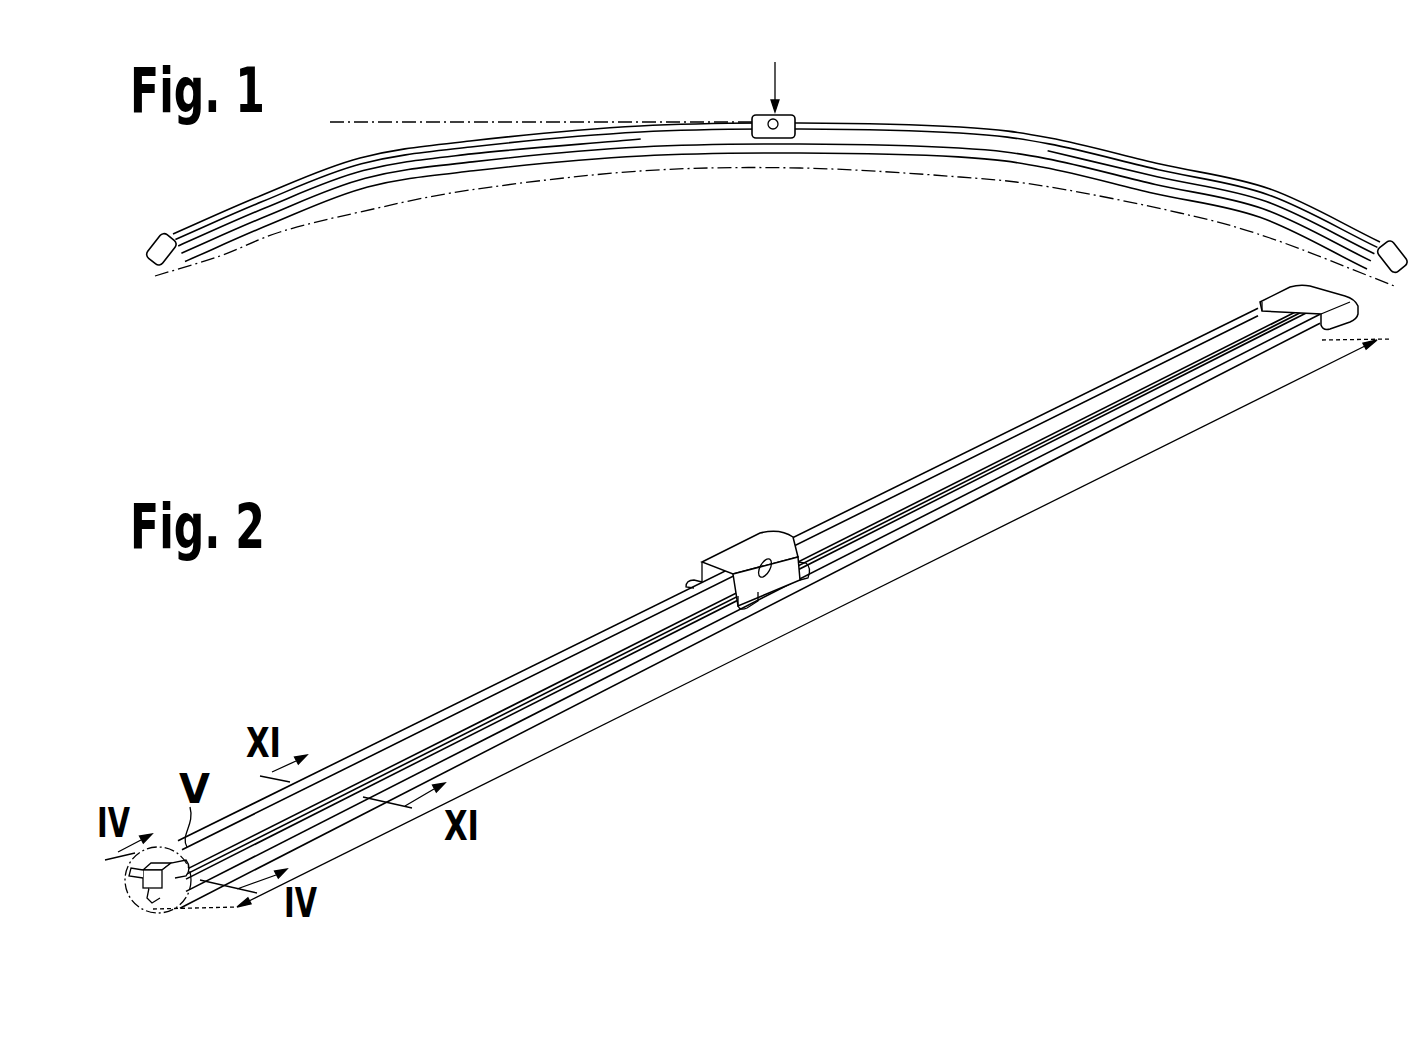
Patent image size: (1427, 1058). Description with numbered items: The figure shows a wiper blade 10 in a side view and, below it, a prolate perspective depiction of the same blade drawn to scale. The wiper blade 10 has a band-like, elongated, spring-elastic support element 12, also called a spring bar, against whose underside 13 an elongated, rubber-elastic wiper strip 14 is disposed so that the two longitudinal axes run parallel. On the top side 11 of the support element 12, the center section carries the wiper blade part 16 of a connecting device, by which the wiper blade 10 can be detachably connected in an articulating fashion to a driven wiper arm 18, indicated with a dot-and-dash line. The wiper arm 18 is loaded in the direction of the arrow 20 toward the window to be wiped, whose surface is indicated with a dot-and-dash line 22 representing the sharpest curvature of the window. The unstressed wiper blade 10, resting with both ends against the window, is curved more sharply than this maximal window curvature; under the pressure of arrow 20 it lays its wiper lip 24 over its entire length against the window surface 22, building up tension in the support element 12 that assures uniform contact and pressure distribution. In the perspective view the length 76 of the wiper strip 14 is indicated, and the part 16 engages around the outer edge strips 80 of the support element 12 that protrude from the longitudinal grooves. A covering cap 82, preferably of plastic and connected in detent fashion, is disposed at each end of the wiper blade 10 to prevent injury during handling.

In FIG. 1, the wiper blade 10 is at (776, 184).
In FIG. 2, the wiper blade 10 is at (844, 503).
In FIG. 1, the top side of the support element 11 is at (255, 195).
In FIG. 1, the support element 12 is at (195, 230).
In FIG. 1, the underside of the support element 13 is at (245, 208).
In FIG. 1, the wiper strip 14 is at (487, 170).
In FIG. 1, the wiper blade part of the connecting device 16 is at (782, 120).
In FIG. 2, the wiper blade part of the connecting device 16 is at (760, 545).
In FIG. 1, the wiper arm 18 is at (378, 129).
In FIG. 1, the arrow 20 is at (772, 84).
In FIG. 1, the dot-and-dash line of the window surface 22 is at (753, 172).
In FIG. 1, the wiper lip 24 is at (932, 160).
In FIG. 2, the wiper lip 24 is at (313, 835).
In FIG. 2, the length of the wiper strip 76 is at (772, 624).
In FIG. 2, the outer edge strips 80 is at (687, 583).
In FIG. 1, the covering cap 82 is at (152, 238).
In FIG. 2, the covering cap 82 is at (1297, 300).